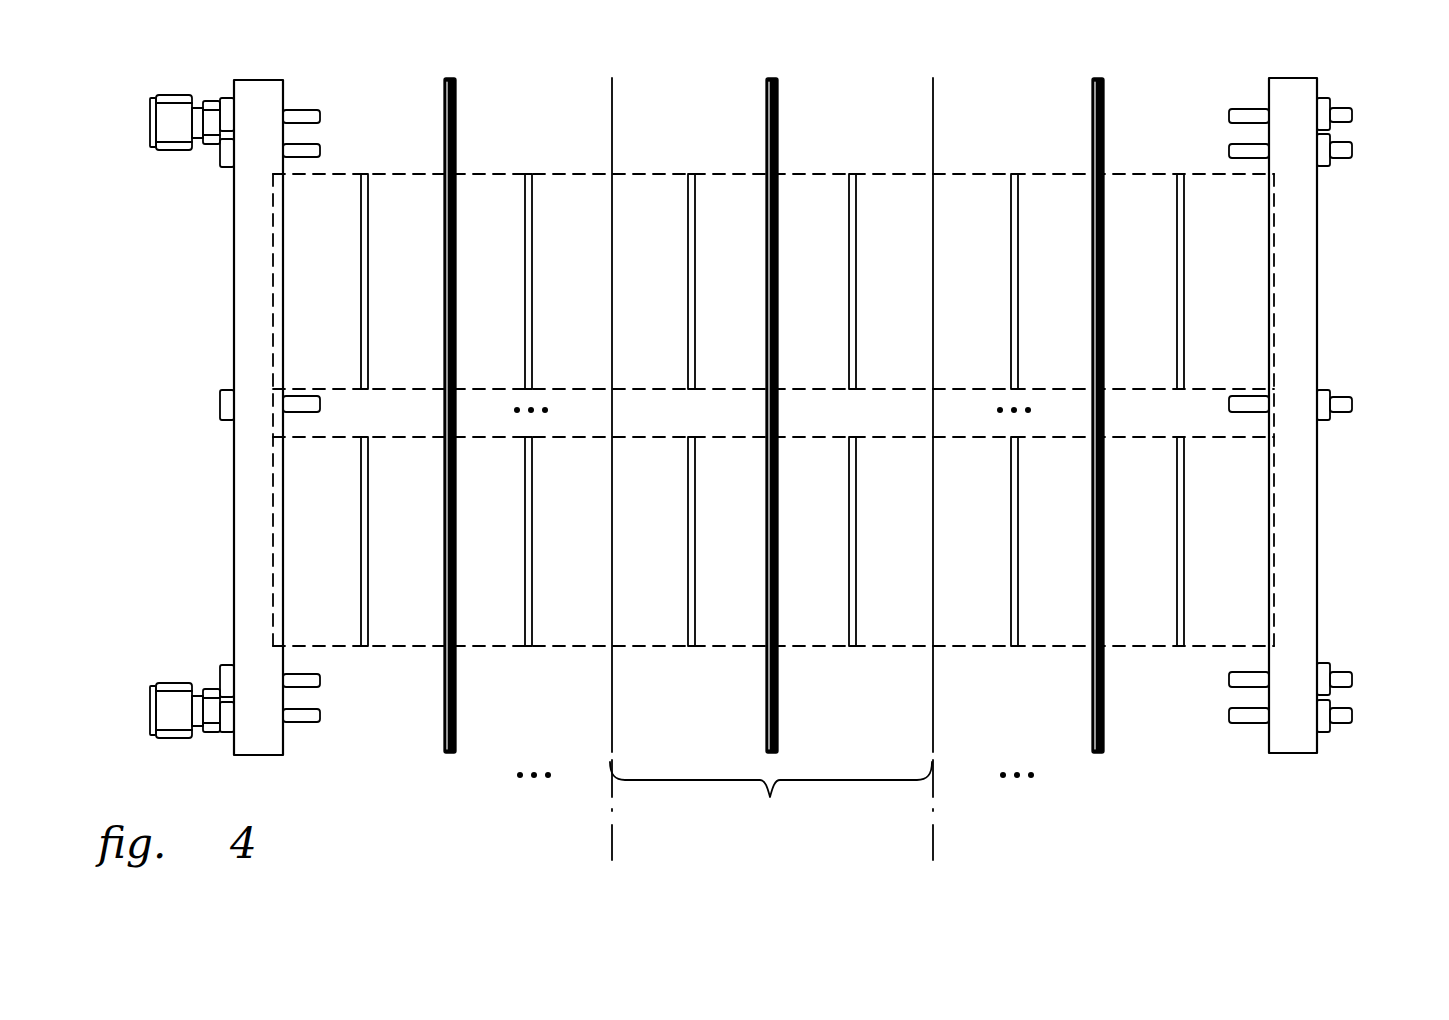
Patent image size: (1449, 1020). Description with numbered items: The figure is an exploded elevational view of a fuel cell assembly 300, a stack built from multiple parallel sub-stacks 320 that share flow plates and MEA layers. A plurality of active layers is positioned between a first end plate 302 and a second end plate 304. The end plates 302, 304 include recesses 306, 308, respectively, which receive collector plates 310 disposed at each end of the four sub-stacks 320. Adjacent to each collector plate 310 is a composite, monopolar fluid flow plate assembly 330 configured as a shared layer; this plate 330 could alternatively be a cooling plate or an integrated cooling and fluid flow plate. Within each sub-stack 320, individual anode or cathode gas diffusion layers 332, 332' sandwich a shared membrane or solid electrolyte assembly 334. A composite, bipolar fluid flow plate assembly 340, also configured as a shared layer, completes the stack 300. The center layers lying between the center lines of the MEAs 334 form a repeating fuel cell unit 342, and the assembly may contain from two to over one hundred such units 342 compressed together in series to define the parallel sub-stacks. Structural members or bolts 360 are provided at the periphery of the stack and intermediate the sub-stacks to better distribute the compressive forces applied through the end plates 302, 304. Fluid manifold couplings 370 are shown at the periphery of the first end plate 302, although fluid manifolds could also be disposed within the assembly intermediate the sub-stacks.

The fuel cell assembly 300 is at (158, 72).
The first end plate 302 is at (253, 84).
The second end plate 304 is at (1297, 86).
The recess 306 is at (284, 262).
The recess 308 is at (1270, 262).
The collector plate 310 is at (366, 275).
The sub-stack 320 is at (822, 172).
The monopolar fluid flow plate assembly 330 is at (456, 127).
The gas diffusion layer 332 is at (659, 410).
The gas diffusion layer 332' is at (816, 410).
The shared membrane electrode assembly 334 is at (612, 147).
The bipolar fluid flow plate assembly 340 is at (766, 138).
The repeating fuel cell unit 342 is at (771, 797).
The bolt 360 is at (320, 152).
The fluid manifold coupling 370 is at (167, 147).